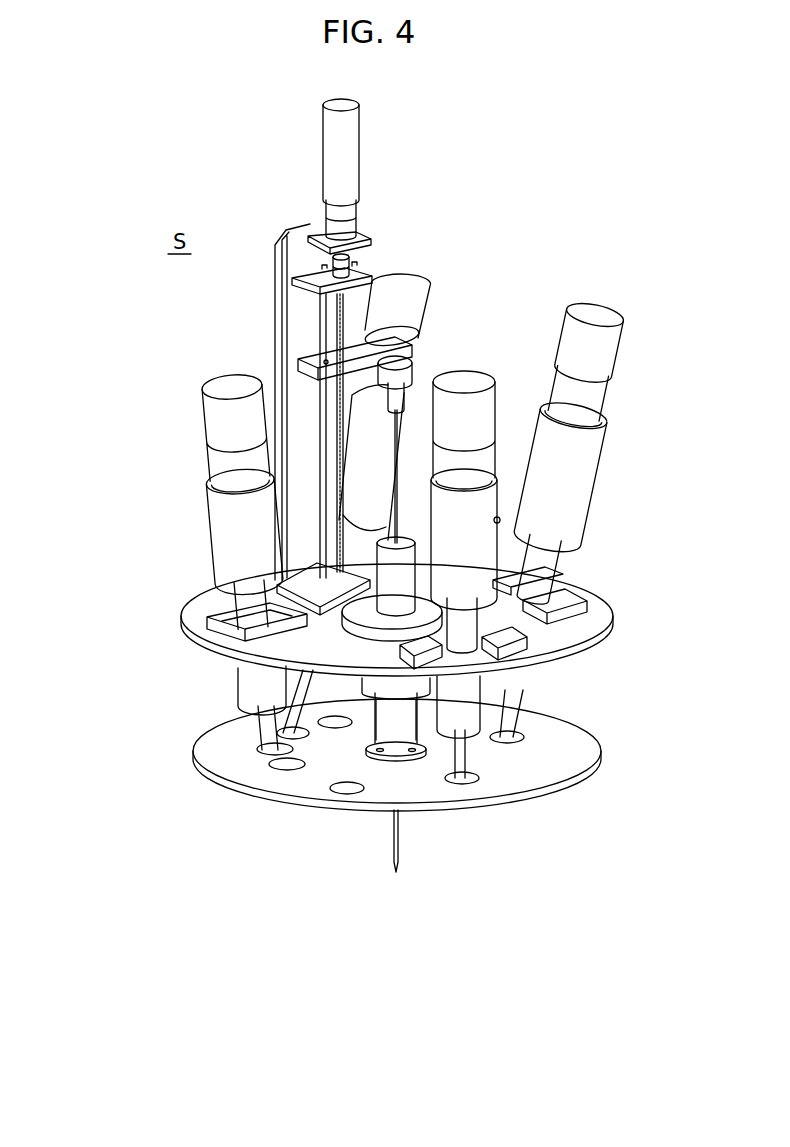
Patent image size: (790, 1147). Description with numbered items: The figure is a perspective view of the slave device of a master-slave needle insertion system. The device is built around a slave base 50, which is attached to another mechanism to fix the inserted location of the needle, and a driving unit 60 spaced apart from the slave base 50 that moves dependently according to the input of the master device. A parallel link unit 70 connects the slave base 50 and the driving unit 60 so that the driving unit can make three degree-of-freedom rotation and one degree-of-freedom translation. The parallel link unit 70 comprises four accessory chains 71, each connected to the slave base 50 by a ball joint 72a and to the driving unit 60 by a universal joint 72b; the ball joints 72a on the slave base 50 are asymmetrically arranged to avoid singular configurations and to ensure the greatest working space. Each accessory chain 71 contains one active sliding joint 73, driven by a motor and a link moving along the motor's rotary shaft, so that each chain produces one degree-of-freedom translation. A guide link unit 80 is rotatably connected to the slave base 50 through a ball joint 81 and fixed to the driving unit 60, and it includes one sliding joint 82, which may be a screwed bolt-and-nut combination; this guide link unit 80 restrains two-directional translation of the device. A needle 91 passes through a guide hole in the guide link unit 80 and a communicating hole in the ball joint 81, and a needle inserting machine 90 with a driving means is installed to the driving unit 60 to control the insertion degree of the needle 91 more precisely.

The slave base 50 is at (253, 802).
The driving unit 60 is at (190, 619).
The parallel link unit 70 is at (196, 511).
The accessory chain 71 is at (222, 382).
The ball joint 72a is at (198, 758).
The universal joint 72b is at (215, 636).
The active sliding joint 73 is at (222, 576).
The guide link unit 80 is at (360, 726).
The ball joint 81 is at (400, 755).
The sliding joint 82 is at (412, 706).
The needle inserting machine 90 is at (258, 309).
The needle 91 is at (400, 474).